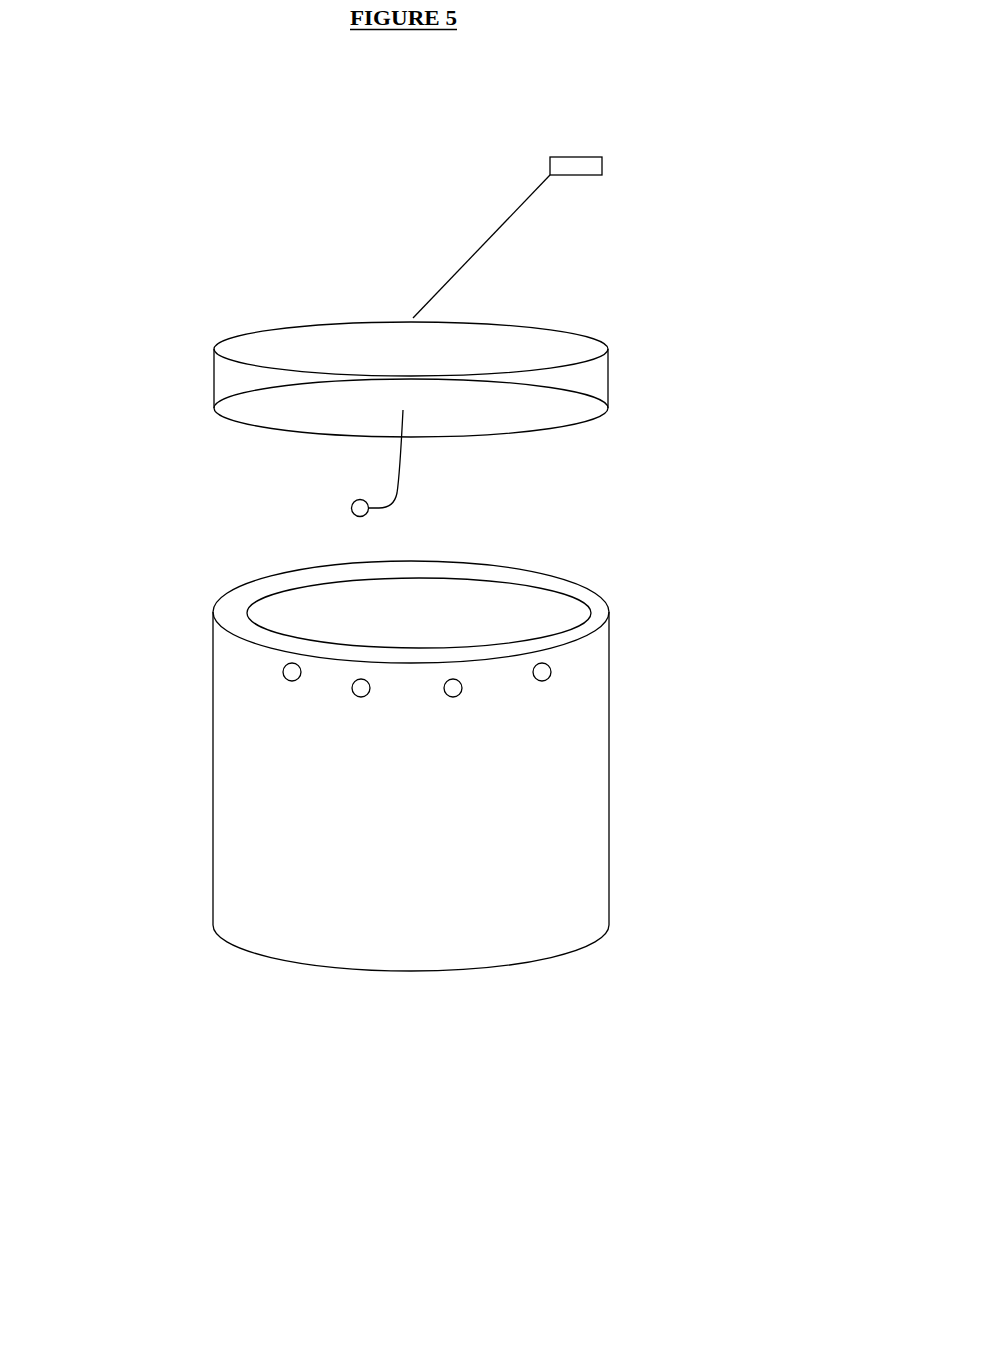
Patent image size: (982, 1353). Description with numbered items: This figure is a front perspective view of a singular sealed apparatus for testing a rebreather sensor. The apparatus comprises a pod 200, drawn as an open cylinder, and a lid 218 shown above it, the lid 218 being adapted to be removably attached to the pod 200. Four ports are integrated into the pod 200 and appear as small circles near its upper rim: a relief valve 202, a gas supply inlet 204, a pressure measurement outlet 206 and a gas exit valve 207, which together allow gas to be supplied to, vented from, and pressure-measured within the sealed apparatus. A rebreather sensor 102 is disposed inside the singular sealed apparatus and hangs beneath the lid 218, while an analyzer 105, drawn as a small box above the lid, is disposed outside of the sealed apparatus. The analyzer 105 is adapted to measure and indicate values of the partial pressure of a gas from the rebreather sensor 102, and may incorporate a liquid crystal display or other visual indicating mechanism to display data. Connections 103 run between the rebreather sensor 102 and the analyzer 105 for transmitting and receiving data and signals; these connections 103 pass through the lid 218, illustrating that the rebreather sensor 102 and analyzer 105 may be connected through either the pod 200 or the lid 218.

The lid 218 is at (340, 333).
The analyzer 105 is at (601, 183).
The connections 103 is at (420, 463).
The rebreather sensor 102 is at (337, 510).
The pod 200 is at (308, 898).
The relief valve 202 is at (270, 687).
The gas supply inlet 204 is at (362, 711).
The pressure measurement outlet 206 is at (456, 711).
The gas exit valve 207 is at (548, 695).